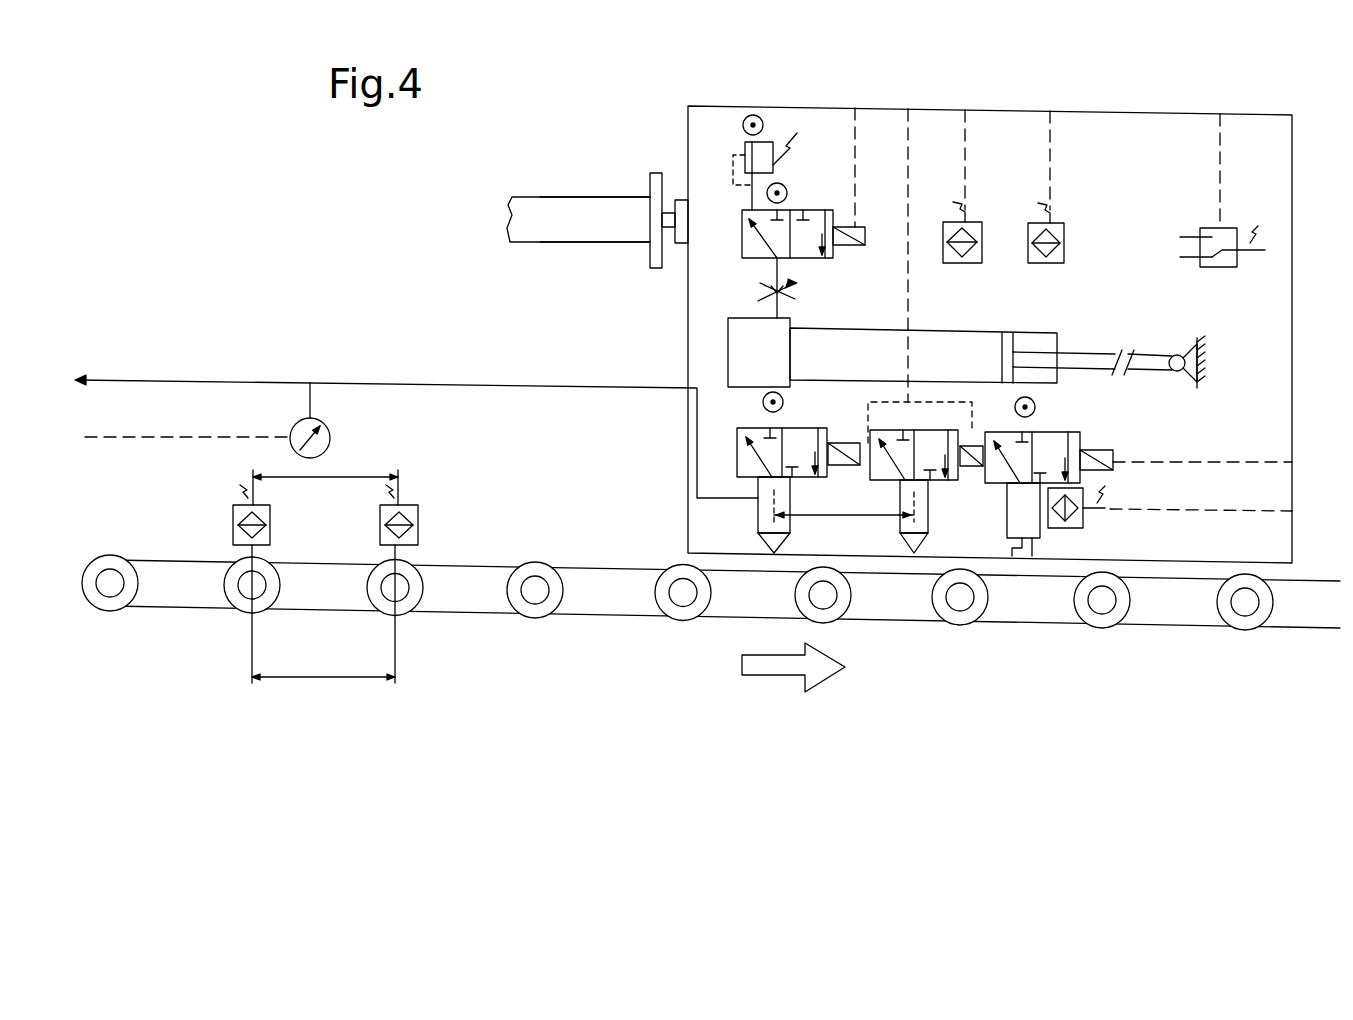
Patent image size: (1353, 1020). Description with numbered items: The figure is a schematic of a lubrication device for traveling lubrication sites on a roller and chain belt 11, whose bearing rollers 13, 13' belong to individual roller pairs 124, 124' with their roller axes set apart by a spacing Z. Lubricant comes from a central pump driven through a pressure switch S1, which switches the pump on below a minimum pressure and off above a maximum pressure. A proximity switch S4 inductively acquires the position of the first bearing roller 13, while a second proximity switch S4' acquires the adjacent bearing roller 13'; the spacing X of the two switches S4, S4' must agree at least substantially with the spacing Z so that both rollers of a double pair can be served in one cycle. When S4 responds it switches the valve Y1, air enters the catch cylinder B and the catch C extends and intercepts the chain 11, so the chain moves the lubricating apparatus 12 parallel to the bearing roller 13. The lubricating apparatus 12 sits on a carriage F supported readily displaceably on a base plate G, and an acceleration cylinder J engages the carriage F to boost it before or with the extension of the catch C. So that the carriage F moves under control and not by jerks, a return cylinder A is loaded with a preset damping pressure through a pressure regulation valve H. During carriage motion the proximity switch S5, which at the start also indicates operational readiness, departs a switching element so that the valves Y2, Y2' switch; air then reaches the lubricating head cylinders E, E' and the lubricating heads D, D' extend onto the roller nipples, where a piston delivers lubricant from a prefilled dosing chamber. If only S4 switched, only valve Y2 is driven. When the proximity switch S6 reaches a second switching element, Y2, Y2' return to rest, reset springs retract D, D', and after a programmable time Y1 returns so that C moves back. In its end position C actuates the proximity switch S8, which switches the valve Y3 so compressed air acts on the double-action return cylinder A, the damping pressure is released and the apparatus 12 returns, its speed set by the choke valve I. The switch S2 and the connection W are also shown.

The roller and chain belt 11 is at (617, 620).
The lubricating apparatus 12 is at (550, 311).
The bearing roller 13 is at (408, 607).
The second bearing roller 13' is at (236, 606).
The individual roller pair 124 is at (420, 619).
The further individual roller pair 124' is at (221, 622).
The acceleration cylinder J is at (585, 236).
The carriage F is at (990, 334).
The pressure switch S1 is at (228, 420).
The limit switch S2 is at (1222, 267).
The proximity switch S4 is at (386, 516).
The second proximity switch S4' is at (235, 516).
The proximity switch S5 is at (962, 253).
The proximity switch S6 is at (1046, 255).
The proximity switch S8 is at (1170, 524).
The spacing of the two switches X is at (325, 490).
The spacing of the roller axes Z is at (323, 665).
The pressure regulation valve H is at (745, 150).
The choke valve I is at (770, 290).
The 5/2-way valve Y1 is at (1138, 450).
The 5/2-way valve Y2 is at (925, 441).
The 5/2-way valve Y2' is at (802, 467).
The valve Y3 is at (803, 256).
The return cylinder A is at (950, 367).
The base plate G is at (1187, 372).
The catch cylinder B is at (1012, 510).
The catch C is at (1008, 542).
The lubricating head D is at (931, 540).
The second lubricating head D' is at (788, 540).
The lubricating head cylinder E is at (929, 506).
The second lubricating head cylinder E' is at (788, 505).
The nozzle connection line W is at (870, 515).